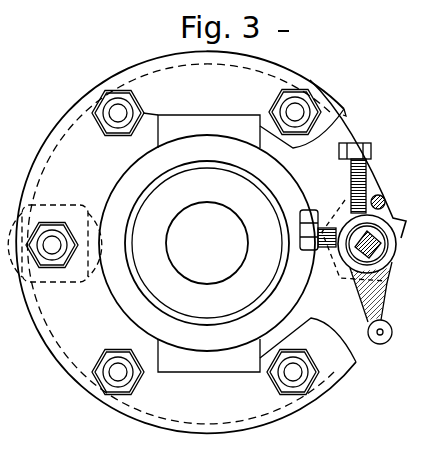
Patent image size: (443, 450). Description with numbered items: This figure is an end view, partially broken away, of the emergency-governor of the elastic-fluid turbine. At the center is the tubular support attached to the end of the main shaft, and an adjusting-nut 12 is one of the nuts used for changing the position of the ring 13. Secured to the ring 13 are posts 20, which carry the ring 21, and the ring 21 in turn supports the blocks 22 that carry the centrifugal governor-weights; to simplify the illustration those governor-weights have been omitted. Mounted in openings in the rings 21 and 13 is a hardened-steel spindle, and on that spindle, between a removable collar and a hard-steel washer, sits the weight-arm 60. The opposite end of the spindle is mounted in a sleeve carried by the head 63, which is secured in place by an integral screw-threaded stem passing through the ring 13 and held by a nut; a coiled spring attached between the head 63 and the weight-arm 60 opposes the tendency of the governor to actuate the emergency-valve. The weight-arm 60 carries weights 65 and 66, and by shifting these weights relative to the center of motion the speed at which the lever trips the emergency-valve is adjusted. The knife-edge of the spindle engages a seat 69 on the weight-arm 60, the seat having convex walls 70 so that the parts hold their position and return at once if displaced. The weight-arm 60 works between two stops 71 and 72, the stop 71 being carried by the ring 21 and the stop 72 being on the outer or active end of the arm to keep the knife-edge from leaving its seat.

The adjusting-nut 12 is at (28, 152).
The ring 13 is at (345, 130).
The posts 20 is at (117, 108).
The ring 21 is at (331, 388).
The blocks 22 is at (204, 122).
The weight-arm 60 is at (383, 306).
The head 63 is at (51, 257).
The weight 65 is at (313, 216).
The weight 66 is at (370, 146).
The seat 69 is at (352, 263).
The convex walls 70 is at (380, 254).
The stop 71 is at (386, 197).
The stop 72 is at (381, 344).